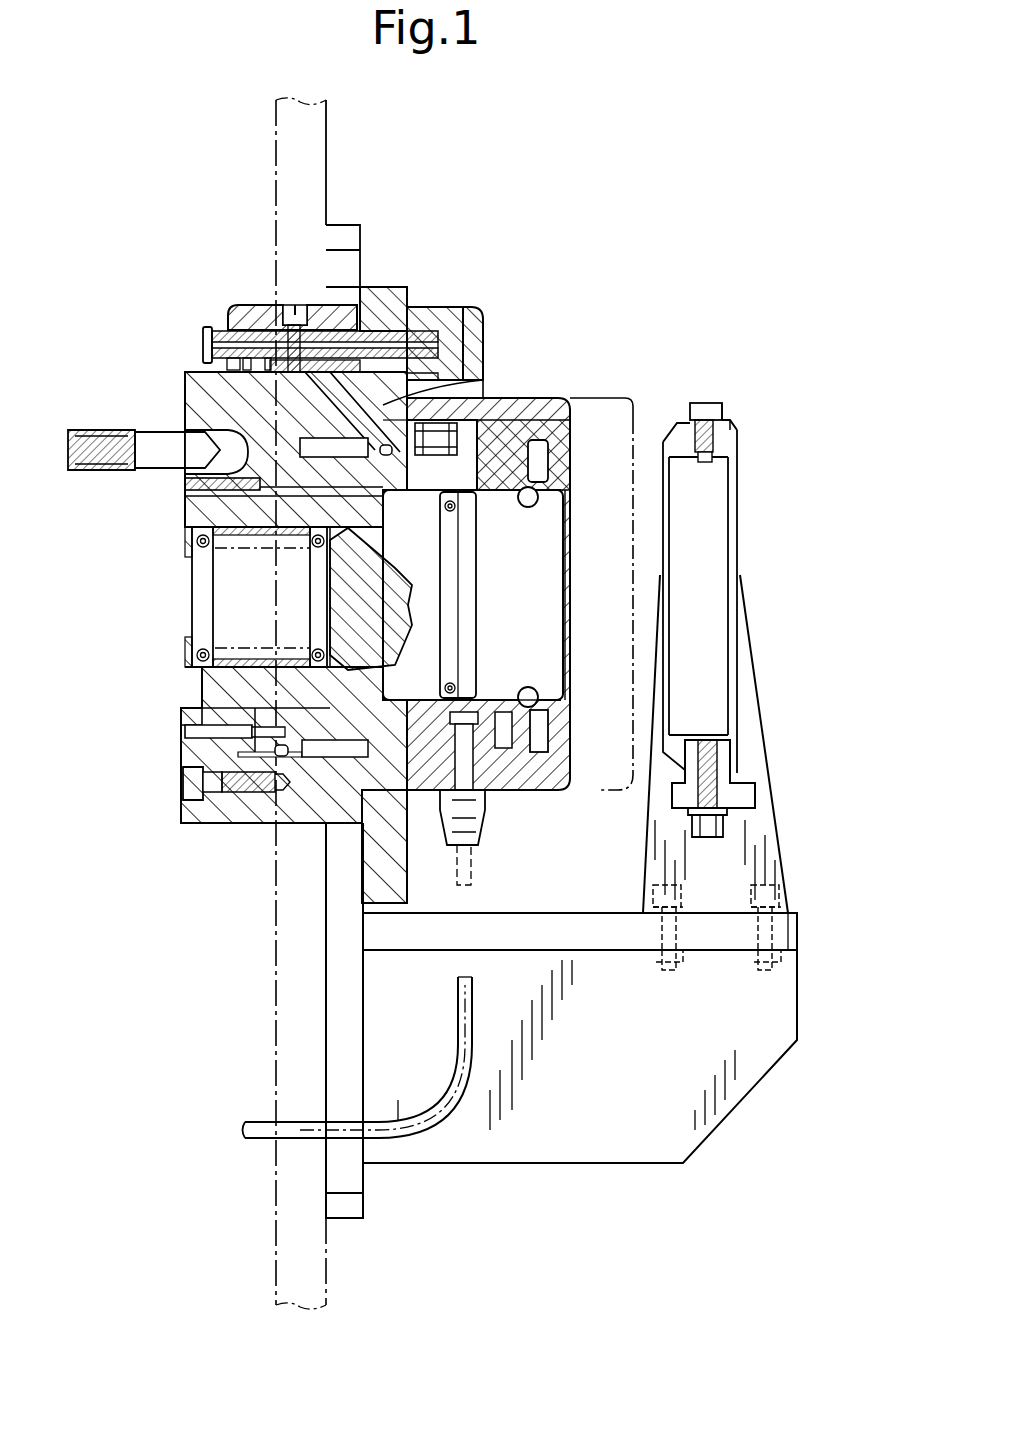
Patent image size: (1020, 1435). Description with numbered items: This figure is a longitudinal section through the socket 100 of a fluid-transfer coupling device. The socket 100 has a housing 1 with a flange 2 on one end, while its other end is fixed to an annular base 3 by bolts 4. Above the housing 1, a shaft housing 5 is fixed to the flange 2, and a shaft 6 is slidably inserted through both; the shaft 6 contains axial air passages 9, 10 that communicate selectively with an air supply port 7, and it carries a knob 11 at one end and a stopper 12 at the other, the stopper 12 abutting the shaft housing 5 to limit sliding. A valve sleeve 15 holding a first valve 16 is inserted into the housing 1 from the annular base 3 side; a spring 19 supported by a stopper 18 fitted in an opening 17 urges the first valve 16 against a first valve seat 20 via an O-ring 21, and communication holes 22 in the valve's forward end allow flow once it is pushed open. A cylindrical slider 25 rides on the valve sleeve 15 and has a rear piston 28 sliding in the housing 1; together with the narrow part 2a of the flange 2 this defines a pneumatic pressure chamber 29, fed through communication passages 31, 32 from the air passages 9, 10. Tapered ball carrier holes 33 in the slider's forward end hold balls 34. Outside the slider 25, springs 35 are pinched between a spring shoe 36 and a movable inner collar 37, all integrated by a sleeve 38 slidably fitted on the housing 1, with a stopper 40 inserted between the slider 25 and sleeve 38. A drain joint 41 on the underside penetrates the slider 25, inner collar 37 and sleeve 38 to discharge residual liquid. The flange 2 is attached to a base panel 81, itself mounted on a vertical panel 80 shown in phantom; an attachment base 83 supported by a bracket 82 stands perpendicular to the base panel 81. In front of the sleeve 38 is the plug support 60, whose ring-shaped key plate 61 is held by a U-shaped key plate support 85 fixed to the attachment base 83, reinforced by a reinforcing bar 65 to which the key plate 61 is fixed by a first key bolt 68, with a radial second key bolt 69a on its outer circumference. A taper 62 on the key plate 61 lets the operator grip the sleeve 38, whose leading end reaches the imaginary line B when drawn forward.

The socket 100 is at (590, 295).
The housing 1 is at (278, 806).
The flange 2 is at (400, 868).
The narrow part 2a is at (450, 415).
The annular base 3 is at (198, 392).
The bolts 4 is at (192, 783).
The shaft housing 5 is at (246, 304).
The shaft 6 is at (380, 330).
The air supply port 7 is at (300, 323).
The air passage 9 is at (415, 322).
The air passage 10 is at (230, 330).
The knob 11 is at (445, 322).
The stopper 12 is at (205, 330).
The valve sleeve 15 is at (196, 690).
The first valve 16 is at (392, 542).
The opening 17 is at (540, 604).
The stopper 18 is at (205, 535).
The spring 19 is at (235, 540).
The first valve seat 20 is at (302, 748).
The O-ring 21 is at (462, 507).
The communication holes 22 is at (348, 556).
The slider 25 is at (498, 467).
The piston 28 is at (250, 482).
The pneumatic pressure chamber 29 is at (338, 750).
The communication passage 31 is at (462, 372).
The communication passage 32 is at (240, 406).
The ball carrier holes 33 is at (522, 688).
The balls 34 is at (536, 703).
The springs 35 is at (392, 432).
The spring shoe 36 is at (255, 497).
The inner collar 37 is at (492, 437).
The sleeve 38 is at (545, 432).
The stopper 40 is at (556, 722).
The drain joint 41 is at (482, 830).
The plug support 60 is at (762, 450).
The key plate 61 is at (680, 440).
The taper 62 is at (702, 405).
The reinforcing bar 65 is at (748, 800).
The first key bolt 68 is at (706, 838).
The second key bolt 69a is at (722, 420).
The vertical panel 80 is at (293, 1210).
The base panel 81 is at (344, 1045).
The bracket 82 is at (606, 1140).
The attachment base 83 is at (725, 934).
The key plate support 85 is at (768, 862).
The imaginary line B is at (622, 388).